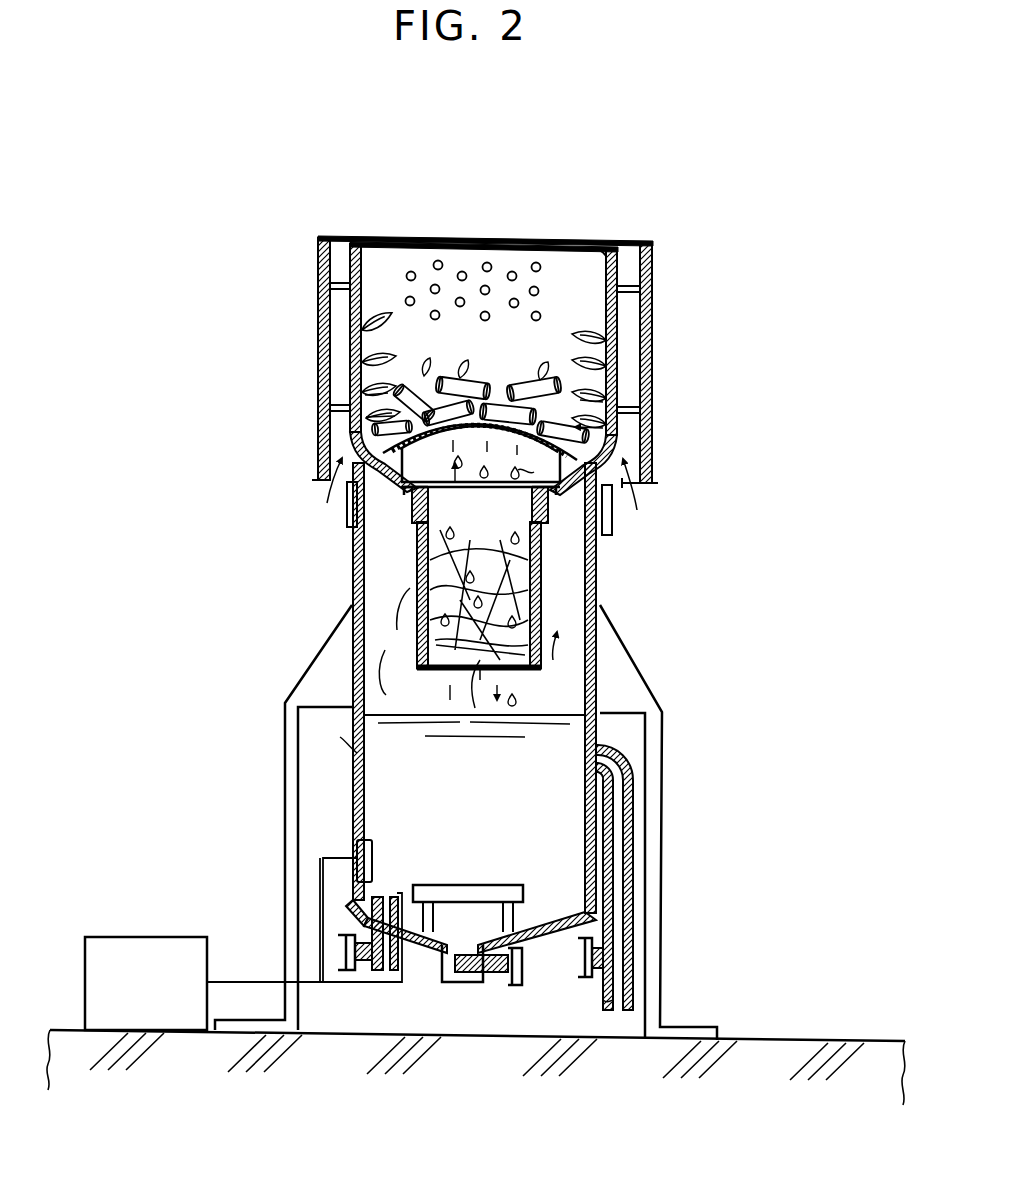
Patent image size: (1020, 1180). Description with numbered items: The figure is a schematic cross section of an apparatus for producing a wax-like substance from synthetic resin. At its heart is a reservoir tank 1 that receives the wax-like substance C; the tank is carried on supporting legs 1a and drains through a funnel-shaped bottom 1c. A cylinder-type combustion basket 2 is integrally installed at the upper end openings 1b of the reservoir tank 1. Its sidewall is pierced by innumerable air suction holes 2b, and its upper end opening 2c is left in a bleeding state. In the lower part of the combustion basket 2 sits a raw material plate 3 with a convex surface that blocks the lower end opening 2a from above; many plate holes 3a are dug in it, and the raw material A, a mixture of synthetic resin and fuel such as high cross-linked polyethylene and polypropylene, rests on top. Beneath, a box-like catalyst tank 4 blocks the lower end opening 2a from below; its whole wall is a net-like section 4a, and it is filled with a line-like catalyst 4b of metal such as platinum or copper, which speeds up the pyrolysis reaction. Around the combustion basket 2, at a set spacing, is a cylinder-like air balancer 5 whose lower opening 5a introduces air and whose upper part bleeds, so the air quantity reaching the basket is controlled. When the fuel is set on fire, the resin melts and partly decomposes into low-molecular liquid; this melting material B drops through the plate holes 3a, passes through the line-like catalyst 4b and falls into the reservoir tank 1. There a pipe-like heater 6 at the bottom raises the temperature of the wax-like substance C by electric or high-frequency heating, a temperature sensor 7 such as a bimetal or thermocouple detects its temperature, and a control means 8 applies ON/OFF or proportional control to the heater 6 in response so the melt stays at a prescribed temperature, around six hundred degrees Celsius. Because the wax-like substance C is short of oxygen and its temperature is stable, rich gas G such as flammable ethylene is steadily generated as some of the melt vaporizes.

The reservoir tank 1 is at (350, 801).
The supporting legs 1a is at (292, 753).
The upper end openings 1b is at (353, 532).
The funnel-shaped bottom / drain 1c is at (545, 913).
The combustion basket 2 is at (389, 254).
The lower end opening 2a is at (598, 547).
The air suction holes 2b is at (512, 272).
The upper end opening 2c is at (592, 247).
The raw material plate 3 is at (347, 437).
The plate holes 3a is at (481, 463).
The catalyst tank 4 is at (412, 572).
The net-like section 4a is at (540, 615).
The line-like catalyst 4b is at (535, 588).
The air balancer 5 is at (652, 444).
The opening 5a is at (630, 489).
The heater 6 is at (500, 885).
The temperature sensor 7 is at (373, 858).
The control means 8 is at (180, 943).
The raw material A is at (470, 386).
The melting material B is at (533, 470).
The wax-like substance C is at (332, 734).
The rich gas G is at (477, 693).